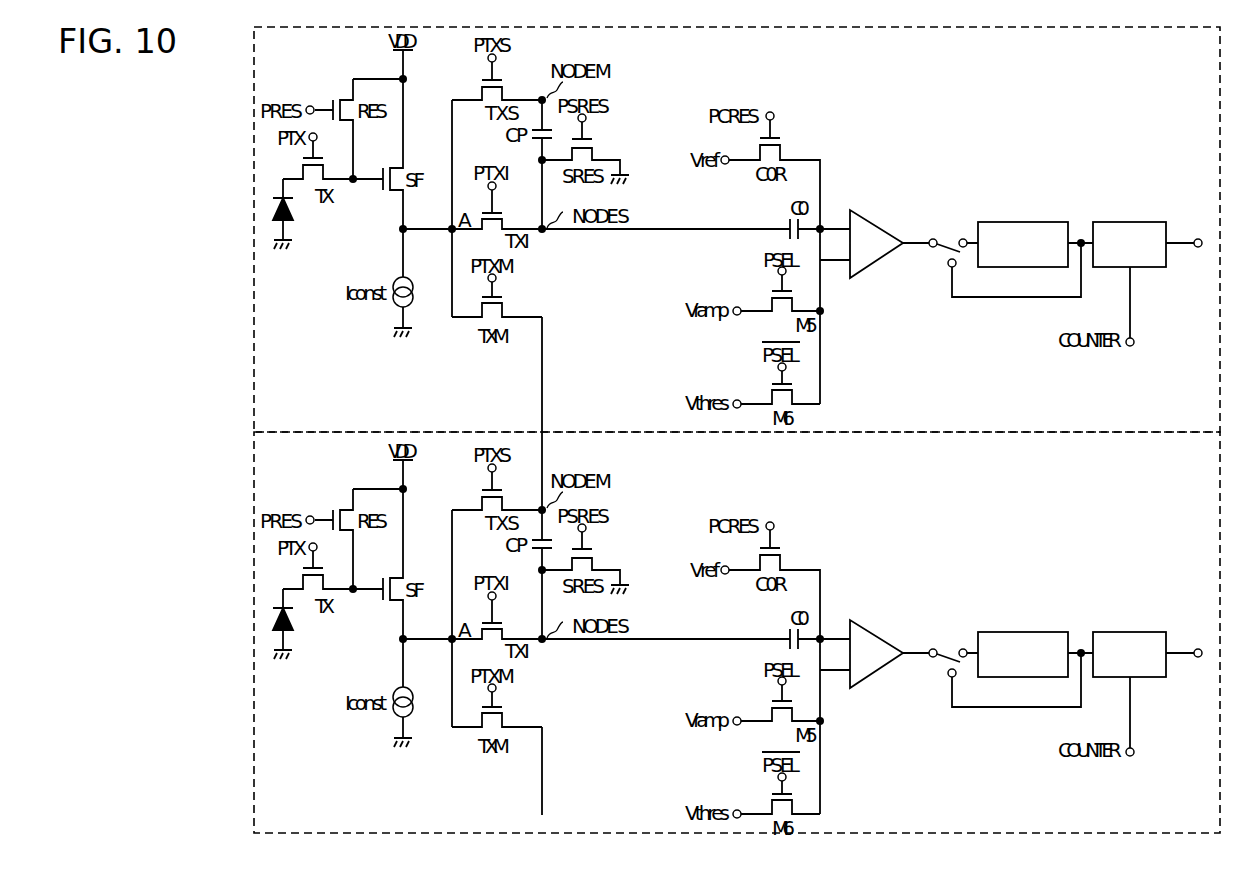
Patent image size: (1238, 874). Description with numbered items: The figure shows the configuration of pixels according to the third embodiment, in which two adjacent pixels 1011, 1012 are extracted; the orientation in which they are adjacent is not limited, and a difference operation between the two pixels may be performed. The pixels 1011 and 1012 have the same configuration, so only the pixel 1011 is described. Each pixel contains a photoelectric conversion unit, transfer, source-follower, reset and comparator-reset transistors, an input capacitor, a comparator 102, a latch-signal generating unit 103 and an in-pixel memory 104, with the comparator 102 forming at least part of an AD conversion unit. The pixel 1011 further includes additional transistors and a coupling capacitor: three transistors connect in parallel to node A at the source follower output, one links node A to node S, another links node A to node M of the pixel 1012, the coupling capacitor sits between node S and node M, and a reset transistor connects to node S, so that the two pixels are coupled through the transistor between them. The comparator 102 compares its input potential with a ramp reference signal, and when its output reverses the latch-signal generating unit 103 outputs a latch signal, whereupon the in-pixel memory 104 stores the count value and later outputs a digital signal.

The pixel 1011 is at (252, 71).
The pixel 1012 is at (252, 479).
The comparator 102 is at (873, 216).
The latch-signal generating unit 103 is at (1015, 222).
The in-pixel memory 104 is at (1115, 222).